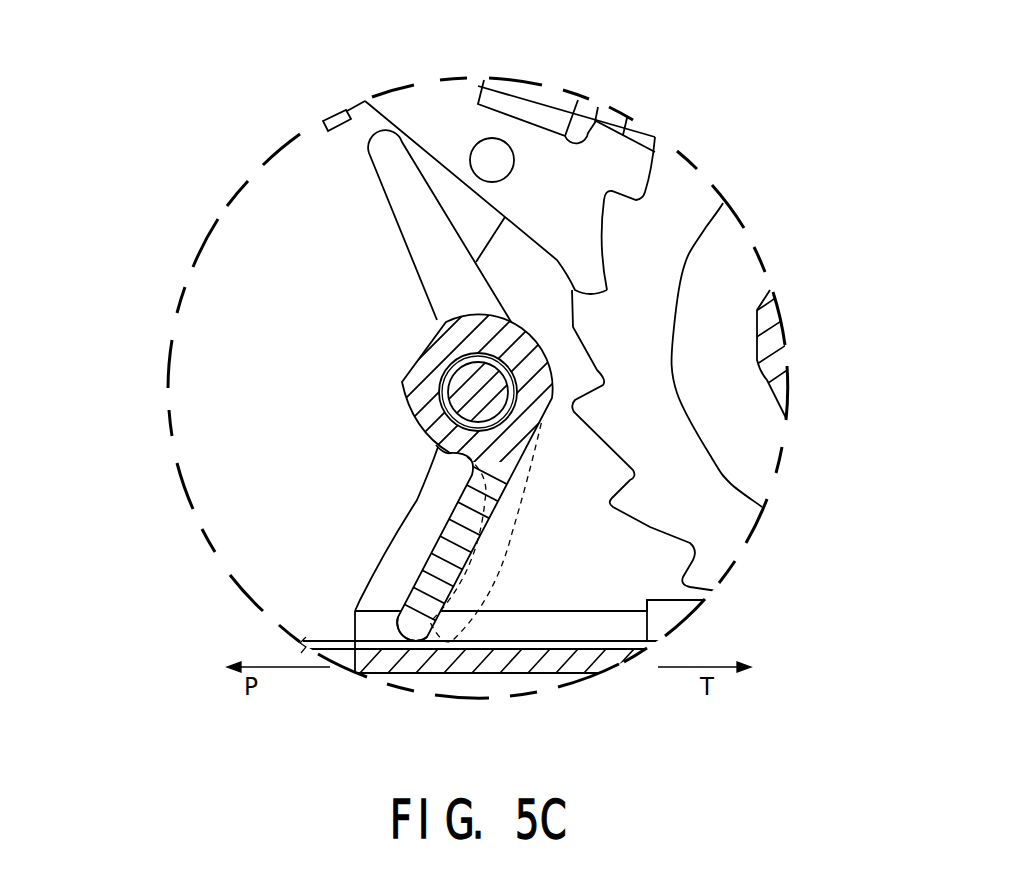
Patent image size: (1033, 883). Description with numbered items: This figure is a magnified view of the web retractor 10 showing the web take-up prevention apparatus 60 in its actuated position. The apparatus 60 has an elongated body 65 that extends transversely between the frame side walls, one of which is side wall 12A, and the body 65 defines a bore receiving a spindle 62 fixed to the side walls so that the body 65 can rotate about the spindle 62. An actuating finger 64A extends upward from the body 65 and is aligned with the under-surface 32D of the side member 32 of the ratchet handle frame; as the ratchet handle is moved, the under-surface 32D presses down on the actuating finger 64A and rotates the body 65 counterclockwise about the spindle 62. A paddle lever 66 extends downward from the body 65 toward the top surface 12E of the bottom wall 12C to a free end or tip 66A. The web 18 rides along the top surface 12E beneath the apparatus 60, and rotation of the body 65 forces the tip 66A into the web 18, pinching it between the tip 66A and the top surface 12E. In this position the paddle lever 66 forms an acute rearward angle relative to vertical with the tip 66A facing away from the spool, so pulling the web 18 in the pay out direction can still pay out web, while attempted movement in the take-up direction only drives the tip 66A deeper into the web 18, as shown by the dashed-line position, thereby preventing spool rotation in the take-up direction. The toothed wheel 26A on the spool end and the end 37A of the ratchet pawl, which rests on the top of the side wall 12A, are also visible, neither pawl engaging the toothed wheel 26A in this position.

The web retractor 10 is at (218, 142).
The side wall 12A is at (620, 573).
The bottom wall 12C is at (533, 680).
The top surface of the bottom wall 12E is at (433, 652).
The web 18 is at (332, 640).
The toothed wheel 26A is at (679, 254).
The side member 32 is at (503, 118).
The under-surface 32D is at (444, 173).
The end of the ratchet pawl 37A is at (640, 130).
The web take-up prevention apparatus 60 is at (362, 388).
The spindle 62 is at (494, 402).
The actuating finger 64A is at (402, 245).
The elongated body 65 is at (440, 455).
The paddle lever 66 is at (425, 578).
The free end or tip of the paddle lever 66A is at (403, 640).